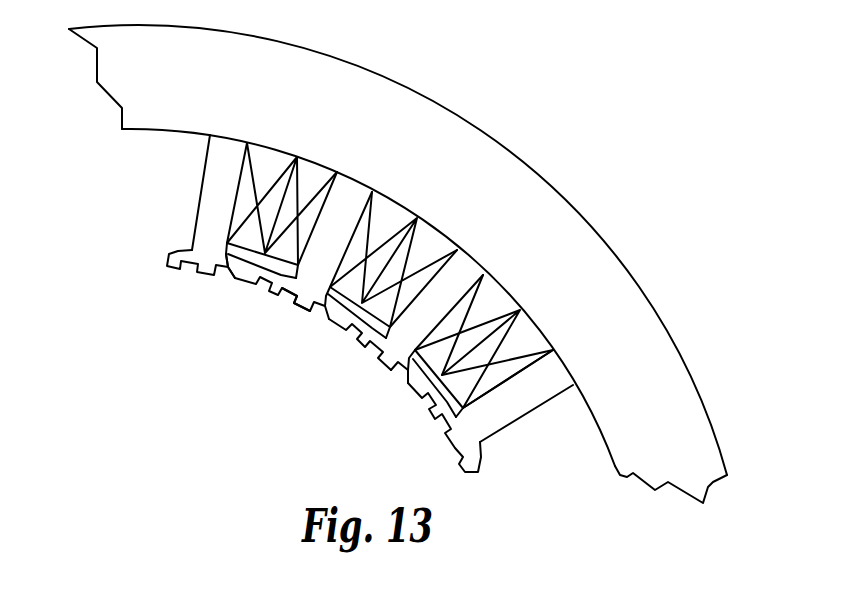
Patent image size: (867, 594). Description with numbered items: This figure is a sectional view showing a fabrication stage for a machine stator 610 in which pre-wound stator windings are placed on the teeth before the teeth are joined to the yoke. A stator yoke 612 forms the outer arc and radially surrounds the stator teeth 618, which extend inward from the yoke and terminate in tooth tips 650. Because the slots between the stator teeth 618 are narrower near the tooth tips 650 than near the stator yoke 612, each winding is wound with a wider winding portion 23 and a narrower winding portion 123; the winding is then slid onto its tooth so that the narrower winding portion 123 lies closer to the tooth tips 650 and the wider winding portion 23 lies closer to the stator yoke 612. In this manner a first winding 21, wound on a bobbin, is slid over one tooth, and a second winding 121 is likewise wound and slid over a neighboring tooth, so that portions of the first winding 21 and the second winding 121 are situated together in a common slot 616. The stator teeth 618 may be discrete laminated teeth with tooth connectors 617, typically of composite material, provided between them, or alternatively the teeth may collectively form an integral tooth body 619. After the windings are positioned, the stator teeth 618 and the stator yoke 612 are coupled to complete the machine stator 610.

The machine stator 610 is at (627, 51).
The stator yoke 612 is at (599, 238).
The common slot 616 is at (420, 265).
The tooth connector 617 is at (253, 287).
The stator tooth 618 is at (208, 227).
The integral tooth body 619 is at (233, 282).
The tooth tip 650 is at (307, 301).
The narrower winding portion 123 is at (387, 363).
The second winding 121 is at (312, 172).
The first winding 21 is at (433, 240).
The wider winding portion 23 is at (478, 260).